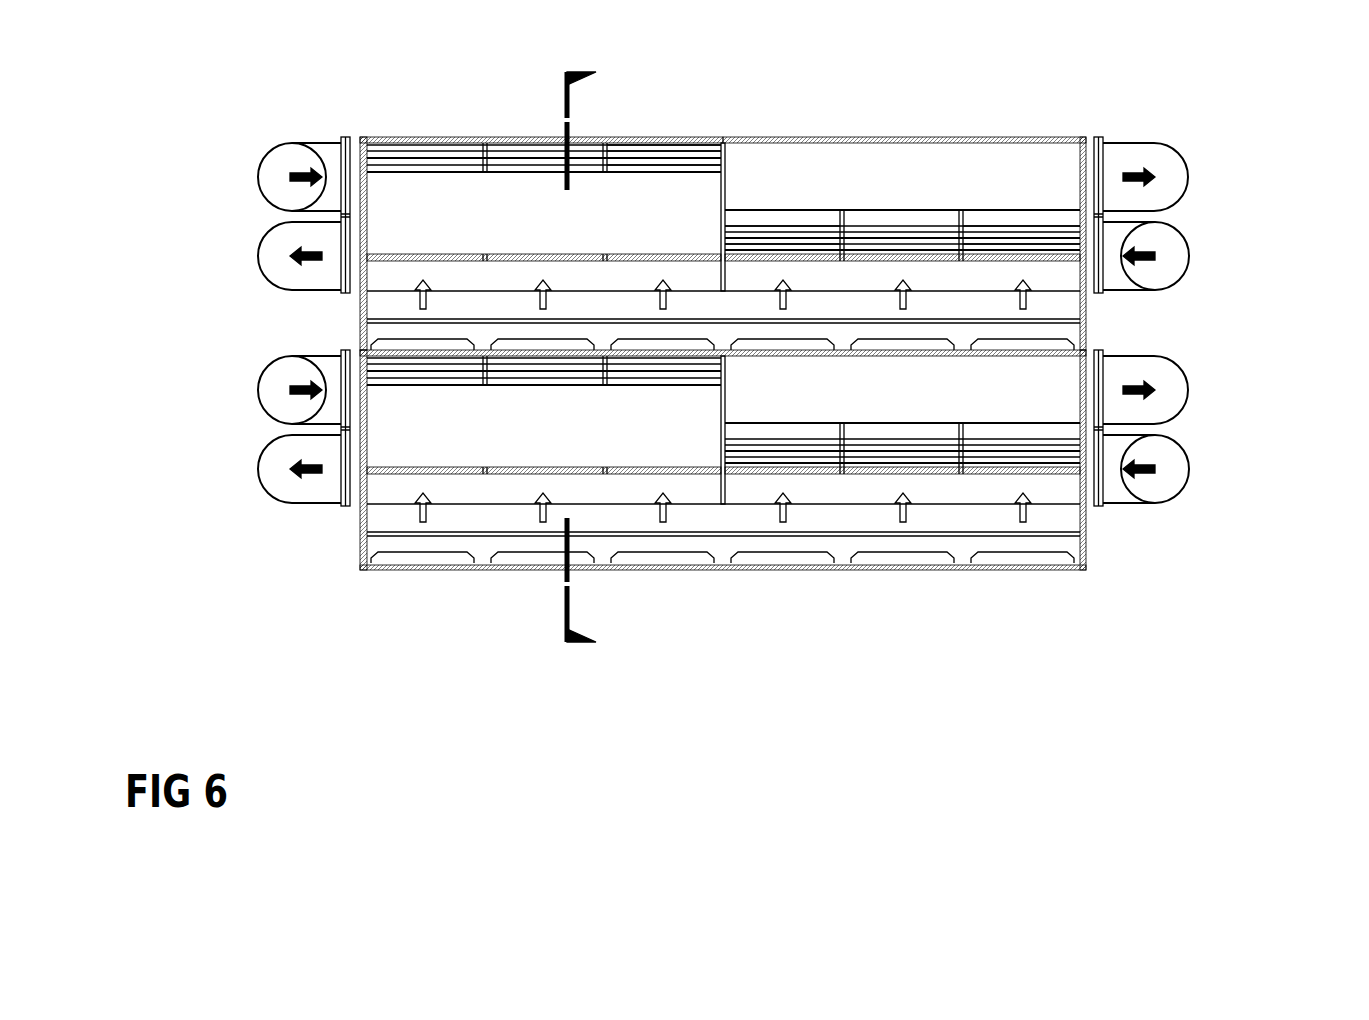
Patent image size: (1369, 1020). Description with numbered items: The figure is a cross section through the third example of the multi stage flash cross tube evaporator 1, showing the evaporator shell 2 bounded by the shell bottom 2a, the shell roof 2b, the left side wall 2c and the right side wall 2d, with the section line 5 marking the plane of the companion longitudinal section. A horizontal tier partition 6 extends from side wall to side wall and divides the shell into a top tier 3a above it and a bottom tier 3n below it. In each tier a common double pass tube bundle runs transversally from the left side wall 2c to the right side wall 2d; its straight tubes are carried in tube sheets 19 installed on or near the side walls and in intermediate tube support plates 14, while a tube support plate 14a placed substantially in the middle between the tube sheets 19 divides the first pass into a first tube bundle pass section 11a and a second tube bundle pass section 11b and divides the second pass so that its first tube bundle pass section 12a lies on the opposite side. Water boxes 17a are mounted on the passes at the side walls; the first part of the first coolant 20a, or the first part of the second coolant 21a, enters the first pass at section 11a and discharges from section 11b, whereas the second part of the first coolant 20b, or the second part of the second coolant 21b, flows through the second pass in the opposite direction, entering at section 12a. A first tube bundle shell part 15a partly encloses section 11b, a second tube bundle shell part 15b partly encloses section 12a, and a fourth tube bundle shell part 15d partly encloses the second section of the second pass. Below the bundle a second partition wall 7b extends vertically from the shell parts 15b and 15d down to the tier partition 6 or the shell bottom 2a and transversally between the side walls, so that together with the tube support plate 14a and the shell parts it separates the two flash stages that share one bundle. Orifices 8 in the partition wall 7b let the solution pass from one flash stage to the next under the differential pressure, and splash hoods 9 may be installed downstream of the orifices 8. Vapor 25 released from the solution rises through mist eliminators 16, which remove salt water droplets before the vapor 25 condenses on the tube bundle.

The multi stage flash cross tube evaporator 1 is at (719, 333).
The evaporator shell 2 is at (1045, 137).
The evaporator shell bottom 2a is at (482, 570).
The evaporator shell roof 2b is at (467, 137).
The left side wall 2c is at (1087, 310).
The right side wall 2d is at (358, 337).
The top tier 3a is at (364, 140).
The bottom tier 3n is at (358, 550).
The section line V-V 5 is at (582, 361).
The horizontal tier partition 6 is at (1062, 336).
The second partition wall 7b is at (970, 518).
The orifices 8 is at (815, 553).
The splash hoods 9 is at (850, 536).
The first tube bundle pass section 11a is at (704, 152).
The second tube bundle pass section 11b is at (1012, 167).
The first tube bundle pass section 12a is at (827, 233).
The tube support plates 14 is at (487, 150).
The tube support plate 14a is at (725, 193).
The first tube bundle shell part 15a is at (862, 170).
The second tube bundle shell part 15b is at (978, 283).
The fourth tube bundle shell part 15d is at (570, 217).
The mist eliminators 16 is at (750, 474).
The water boxes 17a is at (266, 237).
The tube sheets 19 is at (1063, 500).
The first part of the first coolant 20a is at (292, 390).
The second part of the first coolant 20b is at (292, 467).
The first part of the second coolant 21a is at (1153, 176).
The second part of the second coolant 21b is at (1152, 255).
The vapor 25 is at (662, 512).